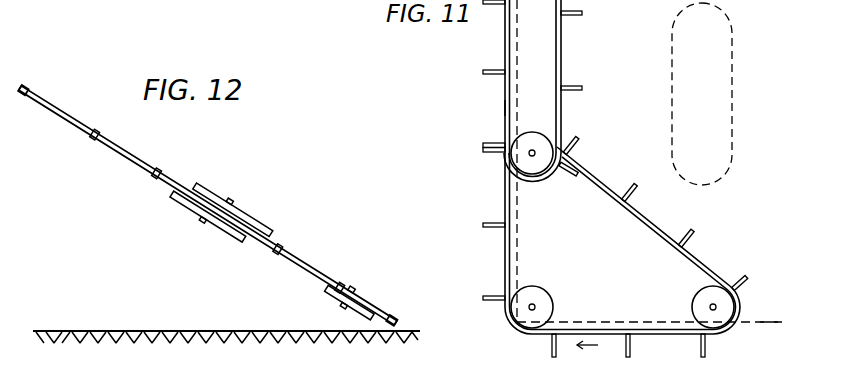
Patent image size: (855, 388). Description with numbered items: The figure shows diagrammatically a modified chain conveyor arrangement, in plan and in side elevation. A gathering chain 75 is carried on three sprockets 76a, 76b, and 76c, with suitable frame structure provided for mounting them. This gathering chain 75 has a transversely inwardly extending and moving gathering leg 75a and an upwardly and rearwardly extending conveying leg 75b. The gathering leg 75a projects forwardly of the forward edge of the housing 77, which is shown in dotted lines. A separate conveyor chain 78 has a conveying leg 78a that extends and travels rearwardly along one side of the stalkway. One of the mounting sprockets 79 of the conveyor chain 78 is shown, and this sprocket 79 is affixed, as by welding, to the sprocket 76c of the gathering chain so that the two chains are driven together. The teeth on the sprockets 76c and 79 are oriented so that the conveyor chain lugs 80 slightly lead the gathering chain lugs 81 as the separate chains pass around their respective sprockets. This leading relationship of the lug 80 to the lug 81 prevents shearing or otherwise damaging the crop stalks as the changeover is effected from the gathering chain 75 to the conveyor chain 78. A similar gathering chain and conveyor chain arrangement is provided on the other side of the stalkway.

In FIG. 12, the gathering chain 75 is at (288, 253).
In FIG. 11, the gathering chain 75 is at (698, 257).
In FIG. 11, the gathering leg 75a is at (589, 331).
In FIG. 12, the conveying leg 75b is at (312, 273).
In FIG. 11, the conveying leg 75b is at (505, 246).
In FIG. 11, the sprocket 76a is at (702, 300).
In FIG. 12, the sprocket 76b is at (343, 283).
In FIG. 11, the sprocket 76b is at (543, 295).
In FIG. 12, the sprocket 76c is at (210, 225).
In FIG. 11, the housing 77 is at (750, 323).
In FIG. 12, the conveyor chain 78 is at (112, 143).
In FIG. 11, the conveyor chain 78 is at (562, 40).
In FIG. 11, the conveying leg 78a is at (505, 108).
In FIG. 12, the sprocket 79 is at (222, 192).
In FIG. 11, the sprocket 79 is at (534, 160).
In FIG. 11, the conveyor chain lug 80 is at (486, 145).
In FIG. 11, the gathering chain lug 81 is at (483, 153).